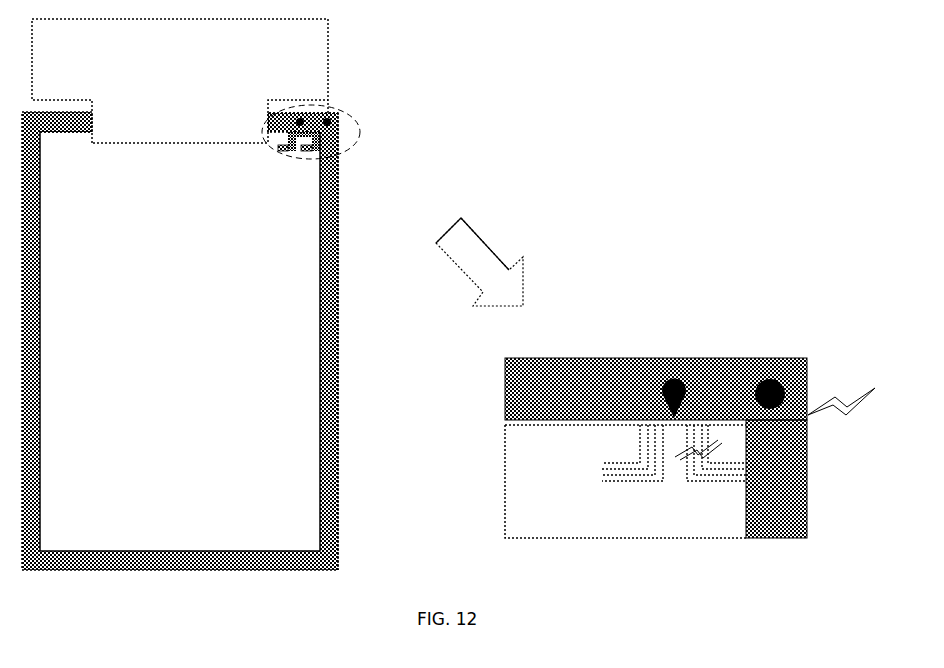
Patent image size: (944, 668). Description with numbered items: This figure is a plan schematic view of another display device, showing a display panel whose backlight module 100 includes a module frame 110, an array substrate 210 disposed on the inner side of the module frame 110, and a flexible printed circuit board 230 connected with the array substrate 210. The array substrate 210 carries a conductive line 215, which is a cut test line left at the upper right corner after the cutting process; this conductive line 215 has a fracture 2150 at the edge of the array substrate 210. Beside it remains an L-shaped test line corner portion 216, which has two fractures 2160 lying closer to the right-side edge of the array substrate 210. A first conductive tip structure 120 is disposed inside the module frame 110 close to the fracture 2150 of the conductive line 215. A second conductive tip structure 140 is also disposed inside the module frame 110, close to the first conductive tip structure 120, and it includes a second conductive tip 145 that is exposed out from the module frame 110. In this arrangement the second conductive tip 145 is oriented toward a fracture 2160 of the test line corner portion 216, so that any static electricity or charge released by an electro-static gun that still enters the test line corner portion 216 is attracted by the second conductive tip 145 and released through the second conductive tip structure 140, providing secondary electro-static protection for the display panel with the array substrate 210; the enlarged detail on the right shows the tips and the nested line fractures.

The backlight module 100 is at (338, 418).
The module frame 110 is at (333, 318).
The first conductive tip structure 120 is at (338, 113).
The second conductive tip structure 140 is at (300, 106).
The second conductive tip 145 is at (304, 118).
The array substrate 210 is at (272, 432).
The conductive line 215 is at (280, 151).
The fracture 2150 is at (316, 150).
The test line corner portion 216 is at (316, 134).
The fracture 2160 is at (340, 130).
The flexible printed circuit board 230 is at (307, 73).